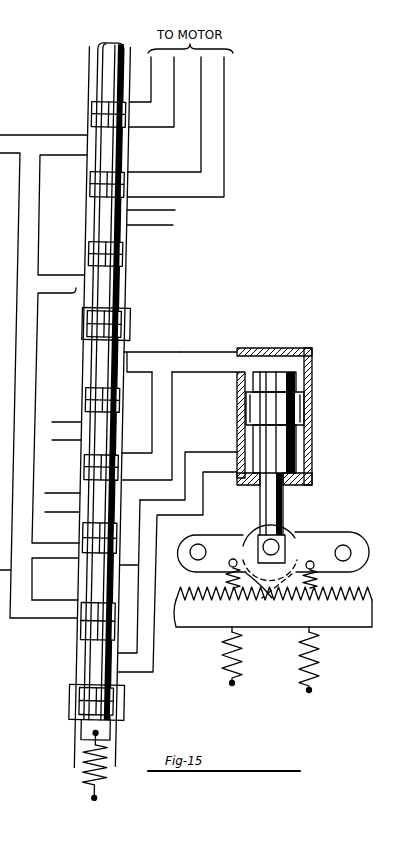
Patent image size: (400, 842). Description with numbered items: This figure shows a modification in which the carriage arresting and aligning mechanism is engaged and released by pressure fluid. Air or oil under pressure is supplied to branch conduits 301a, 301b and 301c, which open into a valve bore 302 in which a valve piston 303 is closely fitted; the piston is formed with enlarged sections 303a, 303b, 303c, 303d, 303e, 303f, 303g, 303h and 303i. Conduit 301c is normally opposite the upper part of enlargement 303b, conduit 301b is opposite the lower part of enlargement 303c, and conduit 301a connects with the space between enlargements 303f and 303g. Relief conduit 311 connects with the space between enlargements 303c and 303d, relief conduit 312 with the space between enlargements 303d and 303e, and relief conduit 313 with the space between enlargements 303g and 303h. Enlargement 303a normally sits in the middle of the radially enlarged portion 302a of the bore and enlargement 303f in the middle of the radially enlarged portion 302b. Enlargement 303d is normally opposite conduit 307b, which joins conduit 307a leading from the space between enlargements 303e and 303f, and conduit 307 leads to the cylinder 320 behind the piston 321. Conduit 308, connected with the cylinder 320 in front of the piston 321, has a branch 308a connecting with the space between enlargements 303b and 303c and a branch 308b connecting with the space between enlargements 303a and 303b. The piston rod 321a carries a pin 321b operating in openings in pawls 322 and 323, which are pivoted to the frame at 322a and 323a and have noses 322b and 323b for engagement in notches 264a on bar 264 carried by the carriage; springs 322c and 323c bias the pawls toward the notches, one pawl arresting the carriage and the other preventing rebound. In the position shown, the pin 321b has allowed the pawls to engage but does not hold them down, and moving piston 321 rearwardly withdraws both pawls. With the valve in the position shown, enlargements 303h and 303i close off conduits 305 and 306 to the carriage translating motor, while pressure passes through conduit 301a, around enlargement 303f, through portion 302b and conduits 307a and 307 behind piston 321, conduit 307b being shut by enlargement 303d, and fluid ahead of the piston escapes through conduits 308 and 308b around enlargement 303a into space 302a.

The bar 264 is at (273, 617).
The notches 264a is at (274, 587).
The branch conduit 301a is at (76, 294).
The branch conduit 301b is at (47, 548).
The branch conduit 301c is at (64, 600).
The valve bore 302 is at (90, 765).
The radially enlarged portion of bore 302a is at (138, 703).
The radially enlarged portion of bore 302b is at (136, 318).
The valve piston 303 is at (72, 664).
The enlarged section 303a is at (83, 706).
The enlarged section 303b is at (89, 632).
The enlarged section 303c is at (89, 535).
The enlarged section 303d is at (89, 468).
The enlarged section 303e is at (89, 395).
The enlarged section 303f is at (88, 326).
The enlarged section 303g is at (89, 255).
The enlarged section 303h is at (89, 186).
The enlarged section 303i is at (89, 112).
The conduit 305 is at (167, 172).
The conduit 306 is at (139, 121).
The conduit 307 is at (206, 352).
The conduit 307a is at (143, 352).
The conduit 307b is at (136, 454).
The conduit 308 is at (212, 452).
The branch conduit 308a is at (138, 544).
The branch conduit 308b is at (135, 617).
The relief conduit 311 is at (62, 513).
The relief conduit 312 is at (63, 441).
The relief conduit 313 is at (144, 226).
The cylinder 320 is at (312, 386).
The piston 321 is at (312, 410).
The piston rod 321a is at (286, 502).
The pin 321b is at (284, 537).
The pawl 322 is at (312, 560).
The pivot 322a is at (349, 545).
The nose 322b is at (282, 594).
The spring 322c is at (317, 651).
The pawl 323 is at (235, 558).
The pivot 323a is at (199, 544).
The nose 323b is at (262, 597).
The spring 323c is at (224, 652).